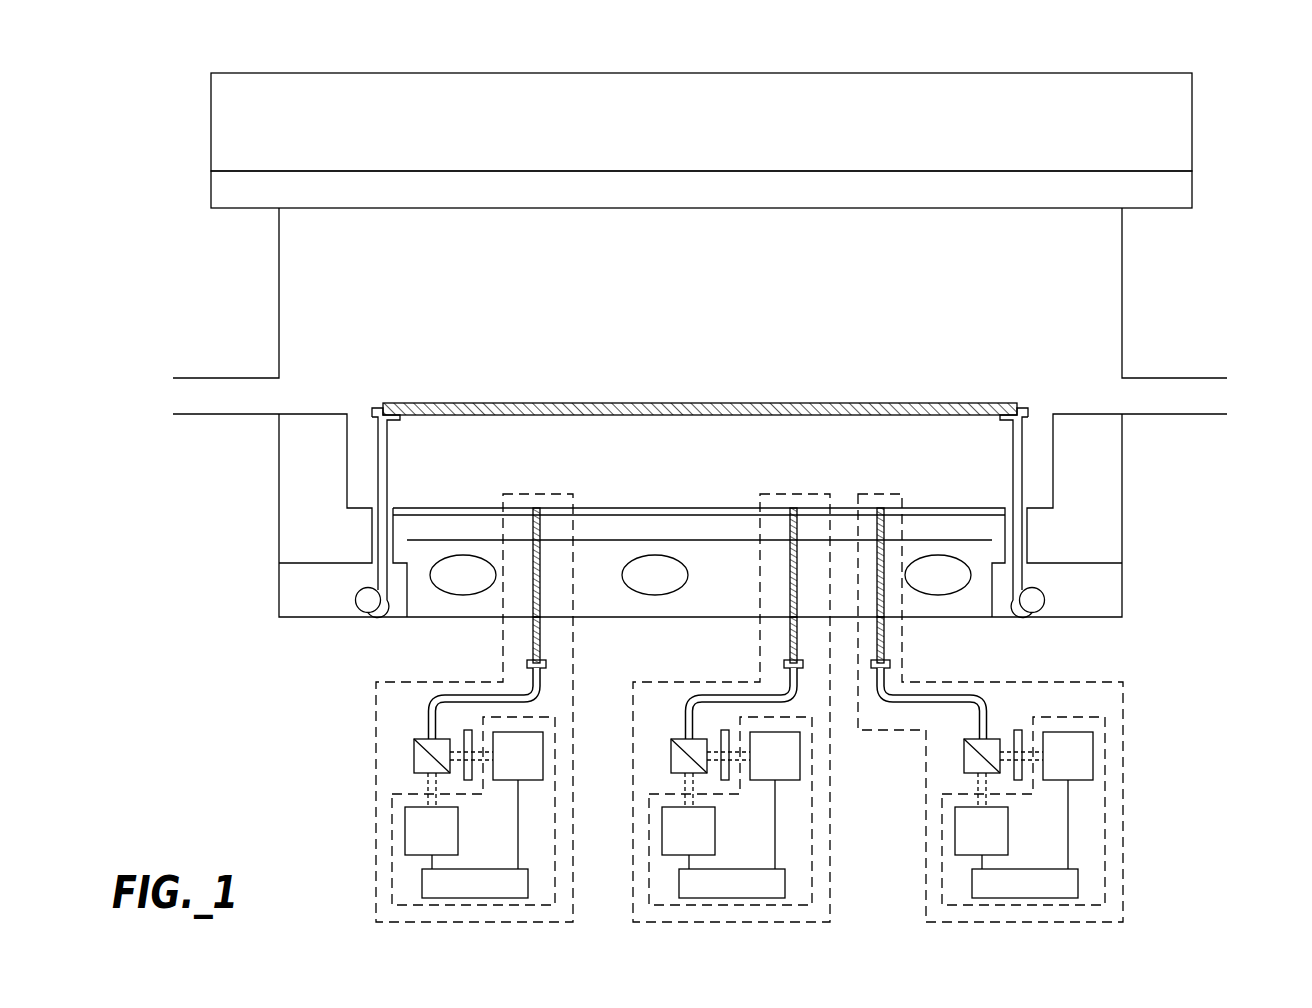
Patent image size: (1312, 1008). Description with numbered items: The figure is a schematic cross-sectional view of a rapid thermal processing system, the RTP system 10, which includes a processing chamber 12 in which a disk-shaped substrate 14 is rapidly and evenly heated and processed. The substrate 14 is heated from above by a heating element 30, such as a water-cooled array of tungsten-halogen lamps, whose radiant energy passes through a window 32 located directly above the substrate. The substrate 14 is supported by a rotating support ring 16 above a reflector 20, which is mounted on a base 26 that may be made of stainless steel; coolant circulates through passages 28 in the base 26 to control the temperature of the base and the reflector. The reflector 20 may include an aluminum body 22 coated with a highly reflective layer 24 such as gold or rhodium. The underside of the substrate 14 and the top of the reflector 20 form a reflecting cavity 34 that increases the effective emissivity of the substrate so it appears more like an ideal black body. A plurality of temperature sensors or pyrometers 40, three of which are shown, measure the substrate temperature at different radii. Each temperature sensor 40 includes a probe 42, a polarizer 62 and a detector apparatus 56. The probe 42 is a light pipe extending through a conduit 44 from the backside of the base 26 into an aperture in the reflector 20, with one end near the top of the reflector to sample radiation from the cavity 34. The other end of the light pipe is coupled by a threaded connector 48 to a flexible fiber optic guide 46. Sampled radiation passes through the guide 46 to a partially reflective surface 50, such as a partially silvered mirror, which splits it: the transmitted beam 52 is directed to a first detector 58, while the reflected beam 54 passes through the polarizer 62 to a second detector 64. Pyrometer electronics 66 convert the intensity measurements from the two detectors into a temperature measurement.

The RTP system 10 is at (1224, 106).
The processing chamber 12 is at (687, 320).
The substrate 14 is at (543, 403).
The rotating support ring 16 is at (1030, 410).
The reflector 20 is at (714, 508).
The aluminum body 22 is at (643, 522).
The highly reflective layer 24 is at (600, 508).
The base 26 is at (710, 583).
The passages 28 is at (655, 598).
The heating element 30 is at (1192, 158).
The window 32 is at (1192, 193).
The reflecting cavity 34 is at (685, 451).
The temperature sensor 40 is at (376, 715).
The probe 42 is at (533, 640).
The conduit 44 is at (540, 603).
The flexible fiber optic guide 46 is at (462, 695).
The threaded connector 48 is at (527, 665).
The partially reflective surface 50 is at (414, 757).
The transmitted beam 52 is at (423, 788).
The reflected beam 54 is at (457, 778).
The detector apparatus 56 is at (392, 865).
The first detector 58 is at (419, 842).
The polarizer 62 is at (468, 782).
The second detector 64 is at (505, 767).
The pyrometer electronics 66 is at (462, 895).